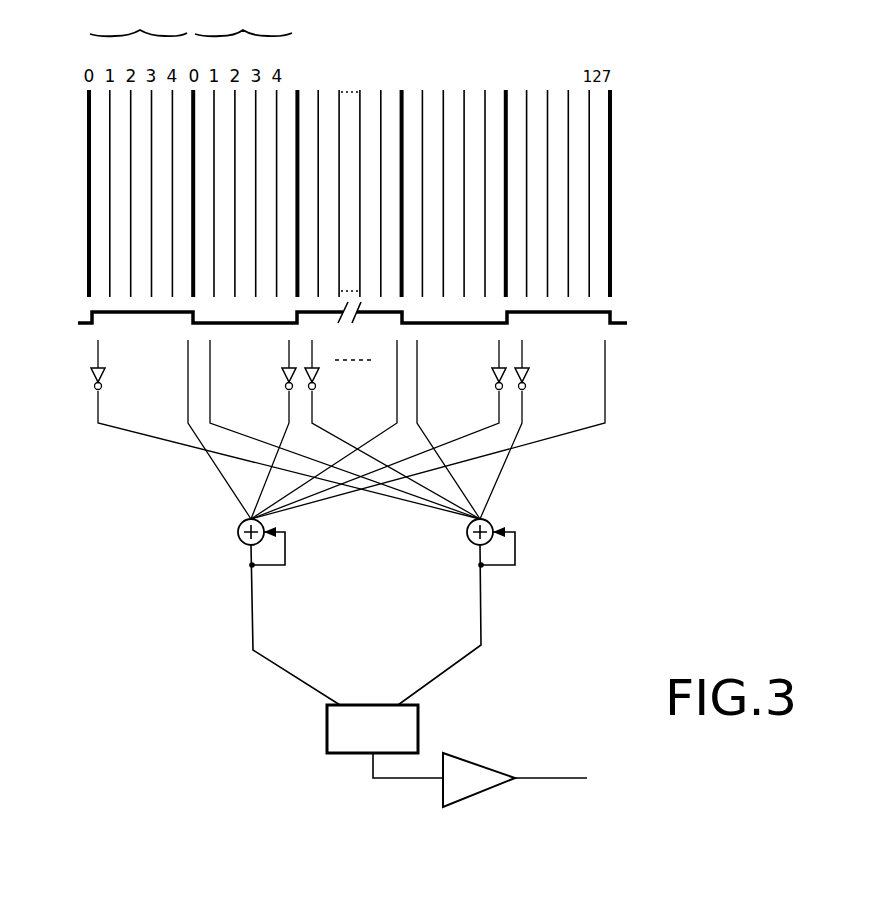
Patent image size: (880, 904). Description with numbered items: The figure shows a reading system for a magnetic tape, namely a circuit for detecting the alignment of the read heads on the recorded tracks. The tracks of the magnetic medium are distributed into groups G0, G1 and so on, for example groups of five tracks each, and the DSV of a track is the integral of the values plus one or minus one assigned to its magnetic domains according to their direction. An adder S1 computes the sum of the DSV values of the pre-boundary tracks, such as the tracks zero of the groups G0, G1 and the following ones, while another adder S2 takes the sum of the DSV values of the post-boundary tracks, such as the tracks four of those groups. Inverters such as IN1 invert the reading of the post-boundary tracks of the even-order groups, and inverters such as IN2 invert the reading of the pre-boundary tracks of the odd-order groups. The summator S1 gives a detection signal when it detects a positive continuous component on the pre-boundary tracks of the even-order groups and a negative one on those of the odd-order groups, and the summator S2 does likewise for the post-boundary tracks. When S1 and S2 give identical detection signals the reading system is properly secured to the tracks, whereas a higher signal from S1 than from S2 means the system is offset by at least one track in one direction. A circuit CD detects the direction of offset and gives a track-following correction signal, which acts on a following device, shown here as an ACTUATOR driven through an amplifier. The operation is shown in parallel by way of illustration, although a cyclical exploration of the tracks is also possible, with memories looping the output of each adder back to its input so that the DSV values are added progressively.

The group of tracks G0 is at (138, 19).
The group of tracks G1 is at (243, 19).
The digital sum value DSV is at (325, 316).
The inverter IN1 is at (91, 378).
The inverter IN2 is at (282, 378).
The summator S1 is at (238, 532).
The summator S2 is at (493, 519).
The circuit for detecting direction of offset CD is at (418, 727).
The actuator driver amplifier ACTUATOR is at (535, 780).